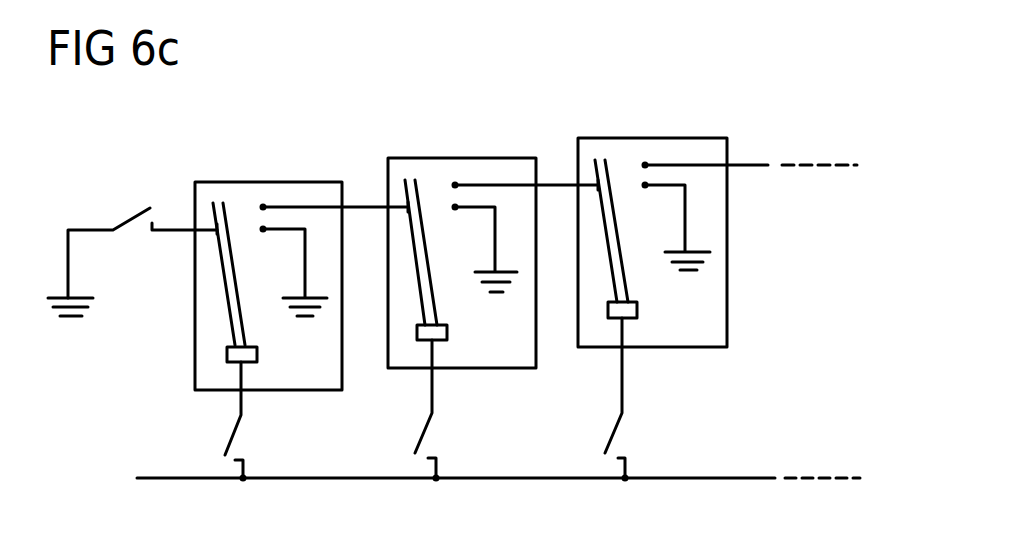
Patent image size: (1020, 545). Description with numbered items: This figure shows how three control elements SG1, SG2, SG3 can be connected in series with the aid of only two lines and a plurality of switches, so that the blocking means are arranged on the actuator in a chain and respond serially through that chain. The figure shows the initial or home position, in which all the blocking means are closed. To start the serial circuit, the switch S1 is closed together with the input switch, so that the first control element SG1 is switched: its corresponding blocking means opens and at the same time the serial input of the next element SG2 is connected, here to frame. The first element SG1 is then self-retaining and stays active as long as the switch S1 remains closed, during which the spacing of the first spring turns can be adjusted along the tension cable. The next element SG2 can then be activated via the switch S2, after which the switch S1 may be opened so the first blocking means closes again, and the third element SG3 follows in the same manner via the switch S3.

The switch S1 is at (126, 218).
The switch S2 is at (422, 433).
The switch S3 is at (612, 433).
The control element SG1 is at (262, 180).
The control element SG2 is at (455, 157).
The control element SG3 is at (643, 137).